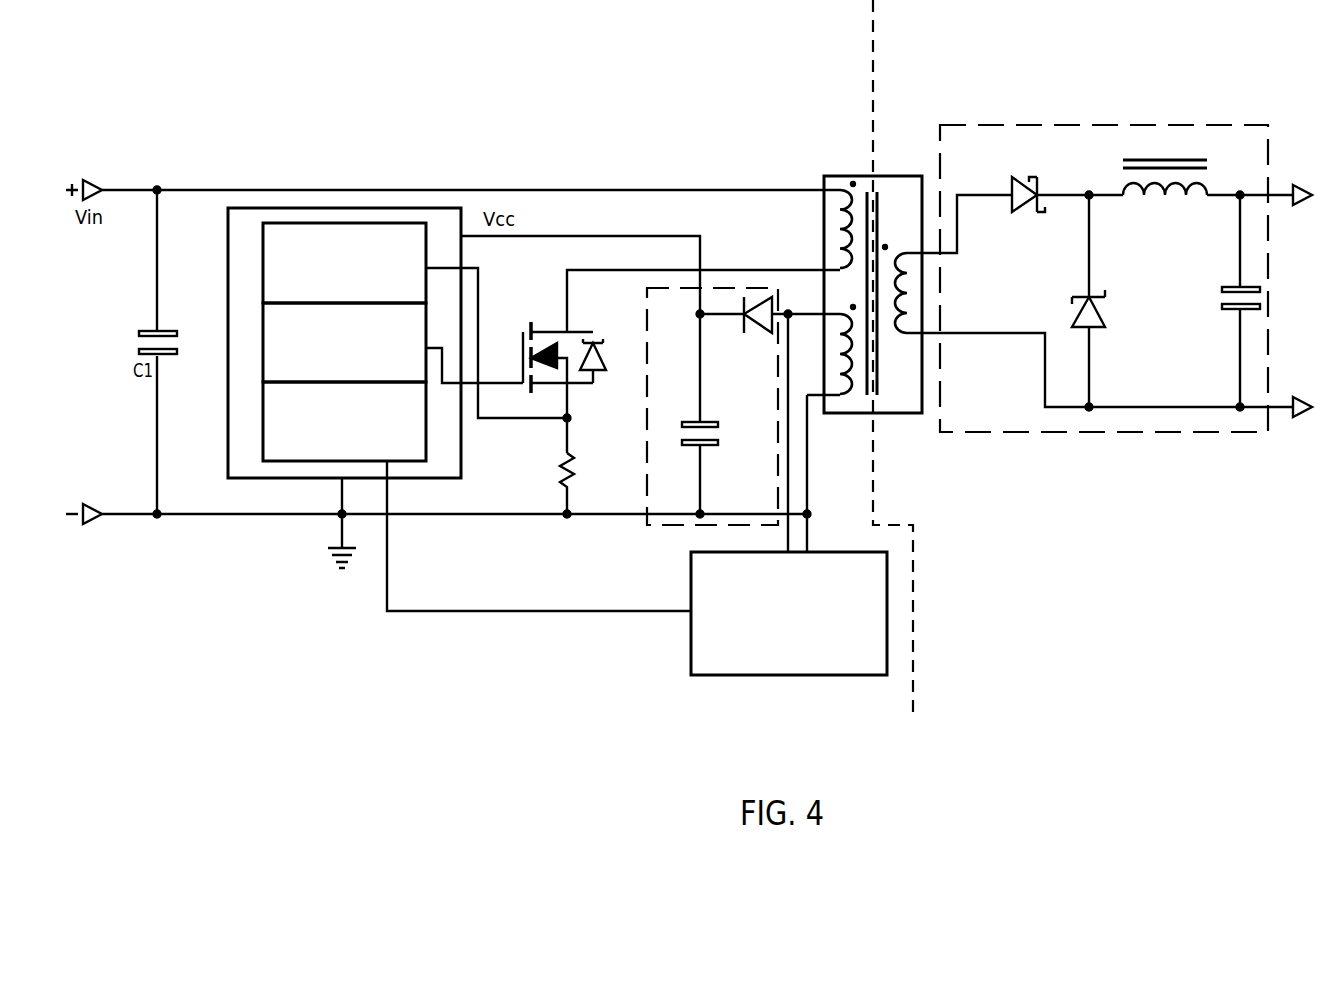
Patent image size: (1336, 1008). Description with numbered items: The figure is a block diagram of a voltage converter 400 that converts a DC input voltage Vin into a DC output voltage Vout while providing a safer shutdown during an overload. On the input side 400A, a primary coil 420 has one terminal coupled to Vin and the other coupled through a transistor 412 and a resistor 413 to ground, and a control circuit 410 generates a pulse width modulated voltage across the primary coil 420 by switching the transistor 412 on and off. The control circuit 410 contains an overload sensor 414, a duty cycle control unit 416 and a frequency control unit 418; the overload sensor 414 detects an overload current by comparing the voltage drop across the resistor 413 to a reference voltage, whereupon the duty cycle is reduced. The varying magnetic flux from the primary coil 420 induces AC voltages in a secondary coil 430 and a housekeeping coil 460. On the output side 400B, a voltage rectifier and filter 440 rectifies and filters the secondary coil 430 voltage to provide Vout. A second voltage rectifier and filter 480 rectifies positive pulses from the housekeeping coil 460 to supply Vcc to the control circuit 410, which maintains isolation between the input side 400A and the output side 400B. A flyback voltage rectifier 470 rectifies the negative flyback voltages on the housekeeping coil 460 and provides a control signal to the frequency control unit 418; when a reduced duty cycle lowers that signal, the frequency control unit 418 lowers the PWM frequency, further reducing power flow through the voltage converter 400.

The voltage converter 400 is at (465, 96).
The input side 400A is at (823, 72).
The output side 400B is at (963, 72).
The control circuit 410 is at (230, 455).
The transistor 412 is at (519, 343).
The resistor 413 is at (556, 470).
The overload sensor 414 is at (273, 240).
The duty cycle control unit 416 is at (272, 320).
The frequency control unit 418 is at (272, 400).
The primary coil 420 is at (843, 227).
The secondary coil 430 is at (900, 253).
The voltage rectifier and filter 440 is at (1098, 128).
The housekeeping coil 460 is at (853, 395).
The flyback voltage rectifier 470 is at (729, 666).
The voltage rectifier and filter 480 is at (648, 463).